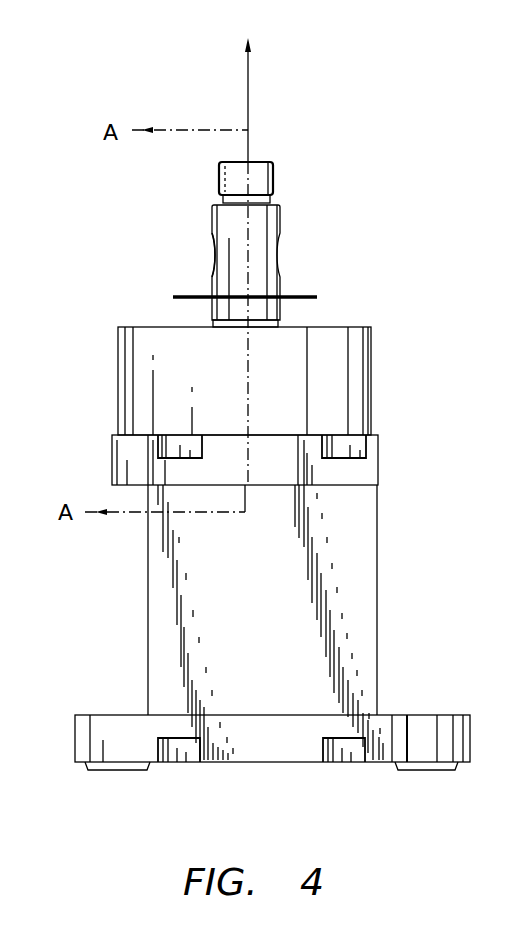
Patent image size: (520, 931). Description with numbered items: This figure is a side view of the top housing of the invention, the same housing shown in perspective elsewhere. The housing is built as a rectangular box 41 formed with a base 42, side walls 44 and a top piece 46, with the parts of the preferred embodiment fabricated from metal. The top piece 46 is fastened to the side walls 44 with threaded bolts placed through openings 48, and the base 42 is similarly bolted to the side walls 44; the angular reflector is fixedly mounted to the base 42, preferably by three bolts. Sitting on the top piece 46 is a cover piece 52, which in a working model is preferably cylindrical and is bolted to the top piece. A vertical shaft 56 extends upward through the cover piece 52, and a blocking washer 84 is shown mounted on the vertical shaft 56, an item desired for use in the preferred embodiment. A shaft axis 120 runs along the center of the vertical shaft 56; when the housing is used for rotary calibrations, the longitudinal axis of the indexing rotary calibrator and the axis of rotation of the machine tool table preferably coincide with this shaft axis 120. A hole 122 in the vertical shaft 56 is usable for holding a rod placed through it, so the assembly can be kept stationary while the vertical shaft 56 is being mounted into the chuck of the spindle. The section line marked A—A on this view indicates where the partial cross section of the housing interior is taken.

The shaft axis 120 is at (246, 92).
The hole 122 is at (215, 250).
The vertical shaft 56 is at (238, 230).
The blocking washer 84 is at (303, 297).
The cover piece 52 is at (324, 384).
The openings 48 is at (178, 432).
The top piece 46 is at (350, 473).
The rectangular box 41 is at (393, 543).
The side walls 44 is at (293, 643).
The base 42 is at (280, 743).